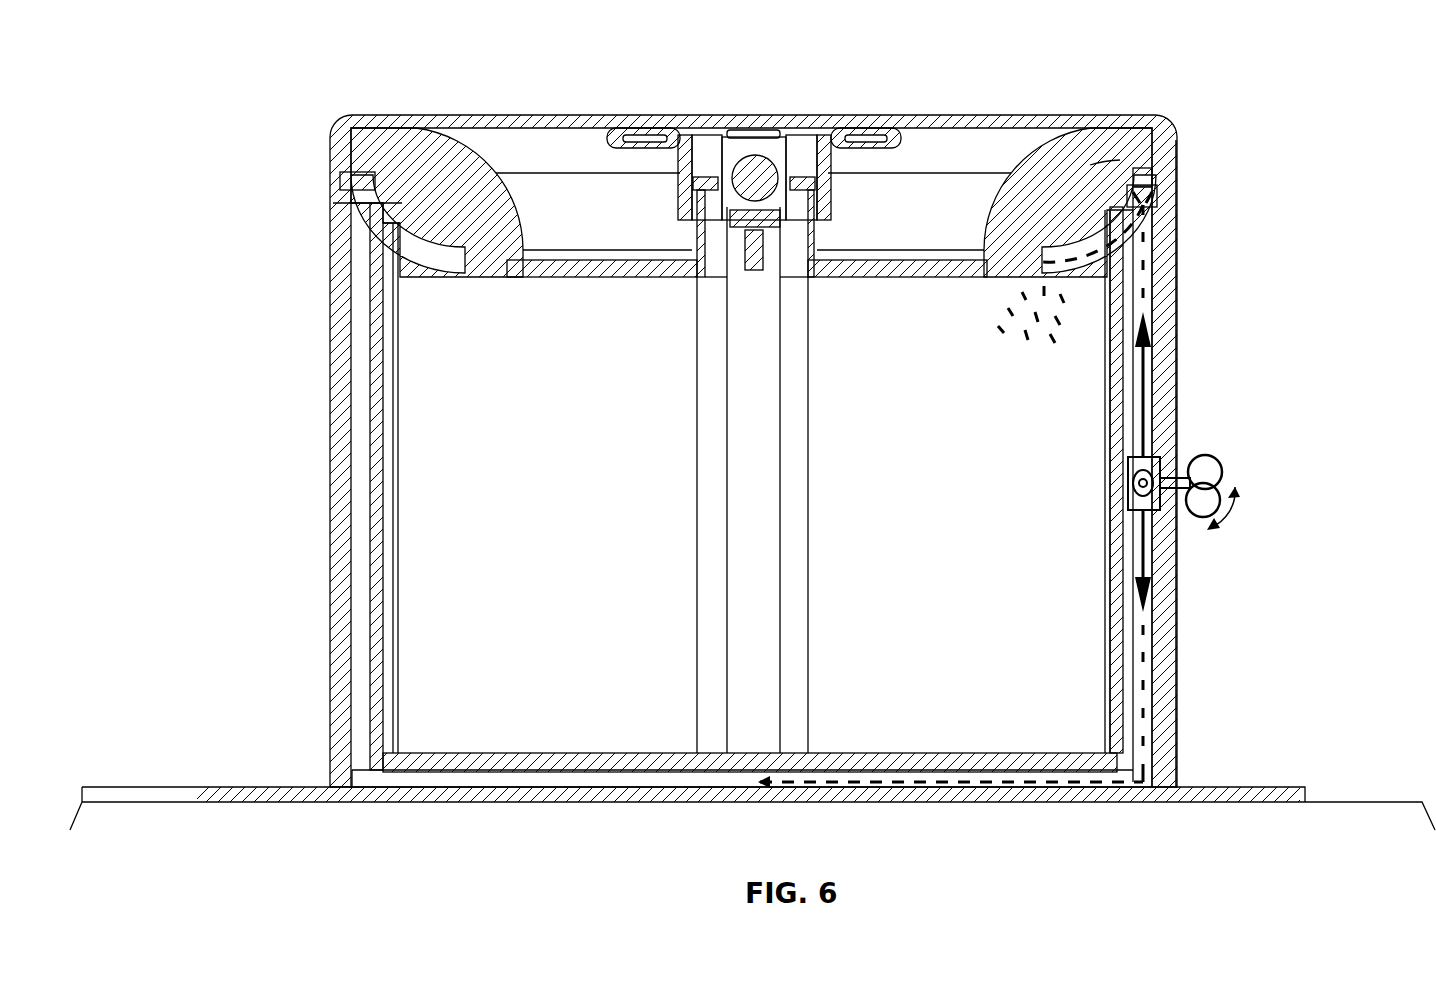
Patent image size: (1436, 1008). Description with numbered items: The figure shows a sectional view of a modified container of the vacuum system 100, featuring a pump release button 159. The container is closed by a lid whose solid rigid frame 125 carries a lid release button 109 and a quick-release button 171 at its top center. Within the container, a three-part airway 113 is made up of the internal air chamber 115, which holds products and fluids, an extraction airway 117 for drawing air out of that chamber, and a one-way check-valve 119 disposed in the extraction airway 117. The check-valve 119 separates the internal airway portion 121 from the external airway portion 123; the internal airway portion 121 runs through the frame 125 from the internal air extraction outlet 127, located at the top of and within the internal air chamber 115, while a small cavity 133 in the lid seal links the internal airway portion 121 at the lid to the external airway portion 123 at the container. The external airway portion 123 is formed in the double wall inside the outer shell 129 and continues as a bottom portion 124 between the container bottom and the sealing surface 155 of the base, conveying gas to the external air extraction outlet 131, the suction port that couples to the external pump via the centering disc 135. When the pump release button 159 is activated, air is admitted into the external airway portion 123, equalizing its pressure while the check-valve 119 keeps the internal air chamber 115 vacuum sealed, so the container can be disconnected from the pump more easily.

The system 100 is at (188, 70).
The lid release button 109 is at (938, 138).
The three-part airway 113 is at (1045, 358).
The internal air chamber 115 is at (893, 506).
The extraction airway 117 is at (1103, 168).
The one-way check-valve 119 is at (1143, 168).
The internal airway portion 121 is at (1105, 162).
The external airway portion 123 is at (1150, 447).
The bottom portion 124 is at (1090, 772).
The solid rigid frame 125 is at (392, 140).
The internal air extraction outlet 127 is at (1032, 275).
The outer shell 129 is at (1165, 538).
The external air extraction outlet 131 is at (755, 787).
The small cavity 133 is at (1157, 197).
The centering disc 135 is at (717, 785).
The sealing surface 155 is at (1193, 797).
The pump release button 159 is at (1212, 475).
The button 171 is at (690, 128).